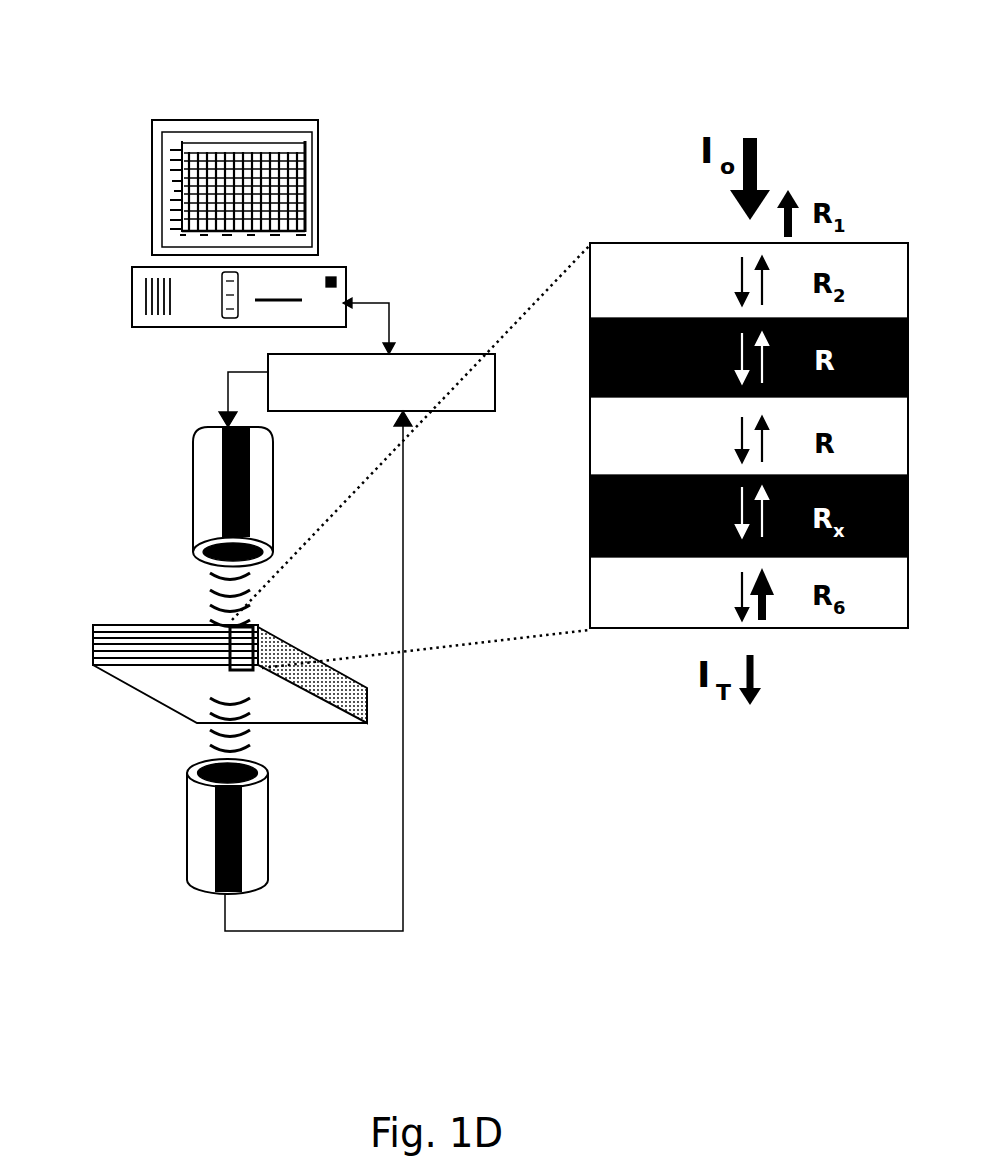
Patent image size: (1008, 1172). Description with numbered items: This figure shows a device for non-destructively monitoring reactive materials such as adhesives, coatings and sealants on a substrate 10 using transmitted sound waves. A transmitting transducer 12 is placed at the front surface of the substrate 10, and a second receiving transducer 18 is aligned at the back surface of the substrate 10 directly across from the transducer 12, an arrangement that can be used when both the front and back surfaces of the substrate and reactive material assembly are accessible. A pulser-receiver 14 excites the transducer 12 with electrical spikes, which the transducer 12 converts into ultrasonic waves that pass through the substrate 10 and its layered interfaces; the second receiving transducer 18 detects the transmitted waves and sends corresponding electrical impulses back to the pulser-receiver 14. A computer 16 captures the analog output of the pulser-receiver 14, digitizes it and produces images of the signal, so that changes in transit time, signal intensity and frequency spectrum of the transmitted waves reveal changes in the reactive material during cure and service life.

The substrate 10 is at (123, 713).
The transducer 12 is at (168, 512).
The pulser-receiver 14 is at (449, 325).
The computer 16 is at (242, 113).
The second receiving transducer 18 is at (168, 878).